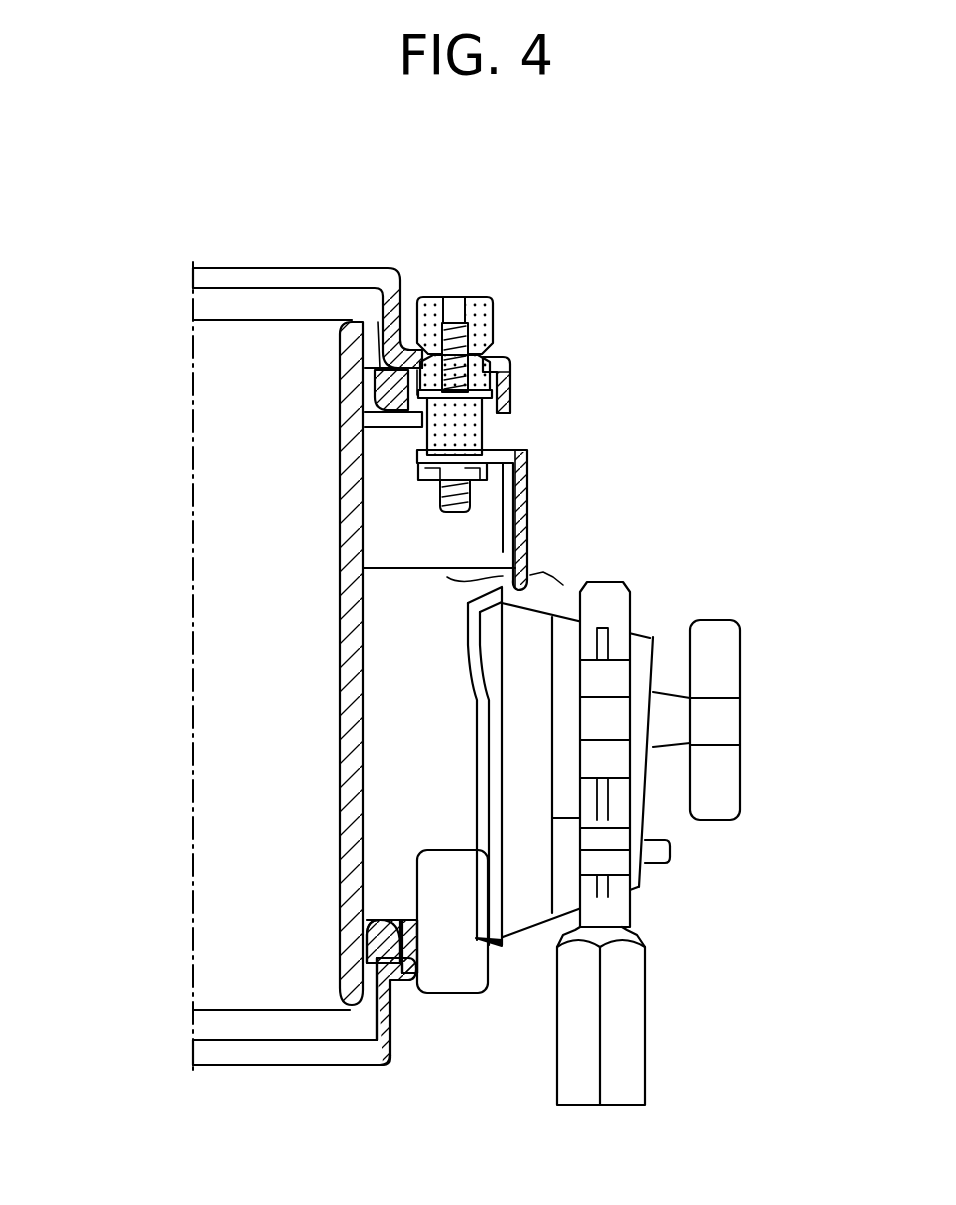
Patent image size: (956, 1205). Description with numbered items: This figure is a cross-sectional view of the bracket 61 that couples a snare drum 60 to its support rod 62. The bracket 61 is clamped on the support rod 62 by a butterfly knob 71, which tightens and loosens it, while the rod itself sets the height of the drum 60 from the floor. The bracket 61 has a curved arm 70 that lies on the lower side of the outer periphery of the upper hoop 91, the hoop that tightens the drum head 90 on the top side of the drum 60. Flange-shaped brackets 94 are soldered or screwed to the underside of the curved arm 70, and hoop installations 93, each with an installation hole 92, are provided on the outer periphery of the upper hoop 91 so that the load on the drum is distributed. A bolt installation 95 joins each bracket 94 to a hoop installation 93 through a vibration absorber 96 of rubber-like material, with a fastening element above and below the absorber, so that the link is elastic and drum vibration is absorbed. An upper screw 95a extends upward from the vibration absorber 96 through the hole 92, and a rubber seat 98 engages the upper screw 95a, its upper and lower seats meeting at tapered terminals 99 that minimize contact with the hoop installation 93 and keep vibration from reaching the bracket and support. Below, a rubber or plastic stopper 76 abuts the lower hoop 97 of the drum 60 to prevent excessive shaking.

The snare drum 60 is at (190, 866).
The bracket 61 is at (652, 636).
The support rod 62 is at (645, 1040).
The curved arm 70 is at (408, 603).
The butterfly knob 71 is at (742, 793).
The stopper 76 is at (441, 856).
The drum head 90 is at (225, 322).
The upper hoop 91 is at (413, 288).
The installation hole 92 is at (503, 352).
The hoop installation 93 is at (508, 383).
The flange-shaped bracket 94 is at (463, 553).
The bolt installation 95 is at (455, 437).
The upper screw 95a is at (453, 297).
The vibration absorber 96 is at (465, 435).
The lower hoop 97 is at (395, 1022).
The rubber seat 98 is at (427, 297).
The terminal 99 is at (500, 350).